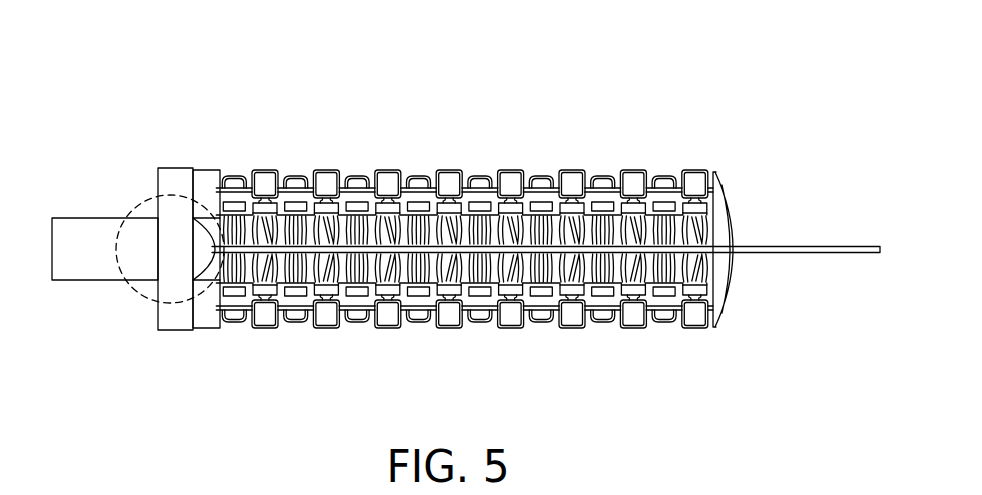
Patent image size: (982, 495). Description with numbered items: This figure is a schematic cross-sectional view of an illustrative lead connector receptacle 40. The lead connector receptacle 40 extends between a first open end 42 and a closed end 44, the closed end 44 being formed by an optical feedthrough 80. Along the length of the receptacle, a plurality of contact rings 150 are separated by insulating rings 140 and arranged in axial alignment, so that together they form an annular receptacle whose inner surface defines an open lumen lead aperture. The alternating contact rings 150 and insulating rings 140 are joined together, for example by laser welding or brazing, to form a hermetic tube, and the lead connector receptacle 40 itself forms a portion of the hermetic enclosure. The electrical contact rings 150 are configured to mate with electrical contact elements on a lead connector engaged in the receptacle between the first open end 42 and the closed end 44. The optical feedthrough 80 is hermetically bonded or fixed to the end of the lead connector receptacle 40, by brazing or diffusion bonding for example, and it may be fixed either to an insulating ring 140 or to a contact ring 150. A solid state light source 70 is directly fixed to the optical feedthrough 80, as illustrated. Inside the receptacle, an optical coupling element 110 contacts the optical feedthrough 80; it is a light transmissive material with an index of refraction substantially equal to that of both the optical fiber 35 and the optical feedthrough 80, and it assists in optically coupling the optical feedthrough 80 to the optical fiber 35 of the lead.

The optical fiber 35 is at (795, 242).
The lead connector receptacle 40 is at (595, 118).
The first open end 42 is at (750, 278).
The closed end 44 is at (202, 140).
The solid state light source 70 is at (98, 270).
The optical feedthrough 80 is at (172, 178).
The optical coupling element 110 is at (208, 267).
The insulating rings 140 is at (387, 183).
The contact rings 150 is at (480, 205).